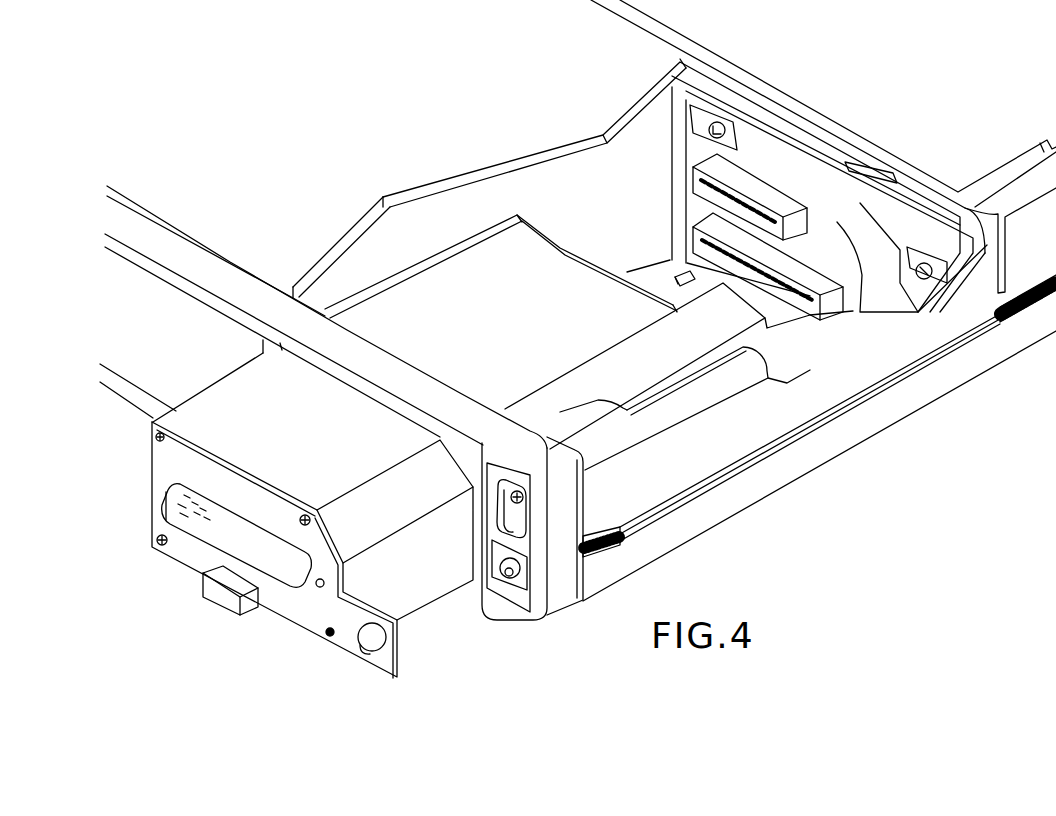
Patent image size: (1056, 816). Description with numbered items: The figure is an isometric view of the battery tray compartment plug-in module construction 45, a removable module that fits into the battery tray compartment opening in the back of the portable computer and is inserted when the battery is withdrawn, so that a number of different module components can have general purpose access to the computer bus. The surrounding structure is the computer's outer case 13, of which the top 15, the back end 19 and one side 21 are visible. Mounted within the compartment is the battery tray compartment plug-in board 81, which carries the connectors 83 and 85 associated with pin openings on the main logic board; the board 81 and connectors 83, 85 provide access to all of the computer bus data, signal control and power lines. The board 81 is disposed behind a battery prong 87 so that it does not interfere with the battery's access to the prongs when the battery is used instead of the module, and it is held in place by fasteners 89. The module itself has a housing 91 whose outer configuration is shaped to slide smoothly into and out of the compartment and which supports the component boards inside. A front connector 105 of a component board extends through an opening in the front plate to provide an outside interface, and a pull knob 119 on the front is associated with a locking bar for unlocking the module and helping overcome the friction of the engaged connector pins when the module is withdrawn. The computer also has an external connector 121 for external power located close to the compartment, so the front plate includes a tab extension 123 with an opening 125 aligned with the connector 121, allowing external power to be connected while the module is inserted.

The battery tray compartment plug-in module construction 45 is at (504, 108).
The outer case 13 is at (467, 183).
The top 15 is at (333, 230).
The back end 19 is at (172, 279).
The side 21 is at (705, 520).
The battery tray compartment plug-in board 81 is at (780, 151).
The connector 83 is at (793, 262).
The connector 85 is at (787, 206).
The battery prong 87 is at (675, 278).
The fastener 89 is at (712, 126).
The housing 91 is at (241, 390).
The front connector 105 is at (203, 500).
The pull knob 119 is at (232, 607).
The external connector 121 is at (508, 578).
The tab extension 123 is at (387, 582).
The opening 125 is at (370, 648).